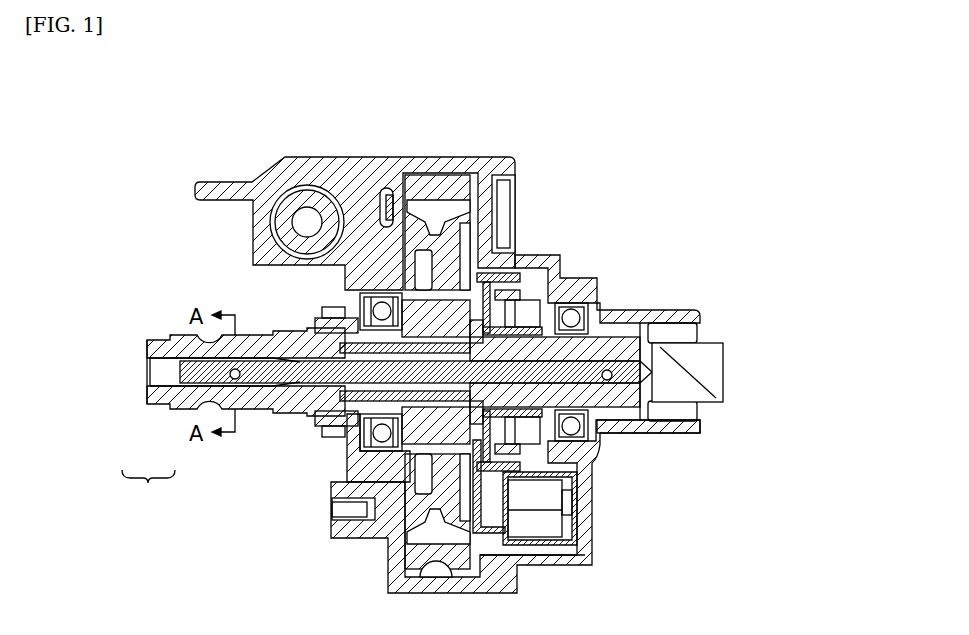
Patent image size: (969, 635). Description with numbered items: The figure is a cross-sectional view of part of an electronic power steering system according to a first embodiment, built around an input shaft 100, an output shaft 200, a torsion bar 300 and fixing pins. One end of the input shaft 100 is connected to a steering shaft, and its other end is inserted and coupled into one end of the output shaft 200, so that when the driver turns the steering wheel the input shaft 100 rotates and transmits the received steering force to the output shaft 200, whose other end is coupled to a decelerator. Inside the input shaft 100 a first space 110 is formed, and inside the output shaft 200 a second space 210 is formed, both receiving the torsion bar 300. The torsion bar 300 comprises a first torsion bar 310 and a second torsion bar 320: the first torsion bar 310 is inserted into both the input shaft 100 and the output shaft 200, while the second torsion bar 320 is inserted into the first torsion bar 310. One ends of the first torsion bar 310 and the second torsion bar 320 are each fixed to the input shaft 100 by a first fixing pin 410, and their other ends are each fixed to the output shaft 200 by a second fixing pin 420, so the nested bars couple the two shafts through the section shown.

The input shaft 100 is at (718, 366).
The first space 110 is at (653, 362).
The output shaft 200 is at (186, 338).
The second space 210 is at (162, 372).
The torsion bar 300 is at (148, 489).
The first torsion bar 310 is at (204, 401).
The second torsion bar 320 is at (180, 375).
The first fixing pin 410 is at (609, 381).
The second fixing pin 420 is at (235, 381).